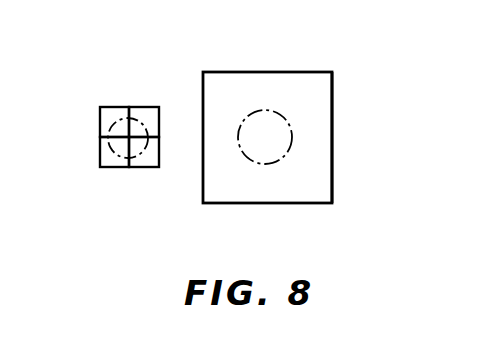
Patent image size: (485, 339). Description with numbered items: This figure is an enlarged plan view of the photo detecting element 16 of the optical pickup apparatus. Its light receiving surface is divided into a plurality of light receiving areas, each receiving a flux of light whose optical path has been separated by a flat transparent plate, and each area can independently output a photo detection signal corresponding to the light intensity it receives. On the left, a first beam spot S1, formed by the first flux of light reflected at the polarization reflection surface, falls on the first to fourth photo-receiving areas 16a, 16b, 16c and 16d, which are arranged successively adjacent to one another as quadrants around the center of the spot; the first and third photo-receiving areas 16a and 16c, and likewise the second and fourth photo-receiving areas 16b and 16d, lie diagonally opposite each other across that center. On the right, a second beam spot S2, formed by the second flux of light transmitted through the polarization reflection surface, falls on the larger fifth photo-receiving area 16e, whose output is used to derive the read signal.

The photo detecting element 16 is at (277, 67).
The first photo-receiving area 16a is at (107, 109).
The second photo-receiving area 16b is at (152, 108).
The third photo-receiving area 16c is at (151, 167).
The fourth photo-receiving area 16d is at (110, 167).
The fifth photo-receiving area 16e is at (333, 142).
The first beam spot S1 is at (110, 126).
The second beam spot S2 is at (273, 163).